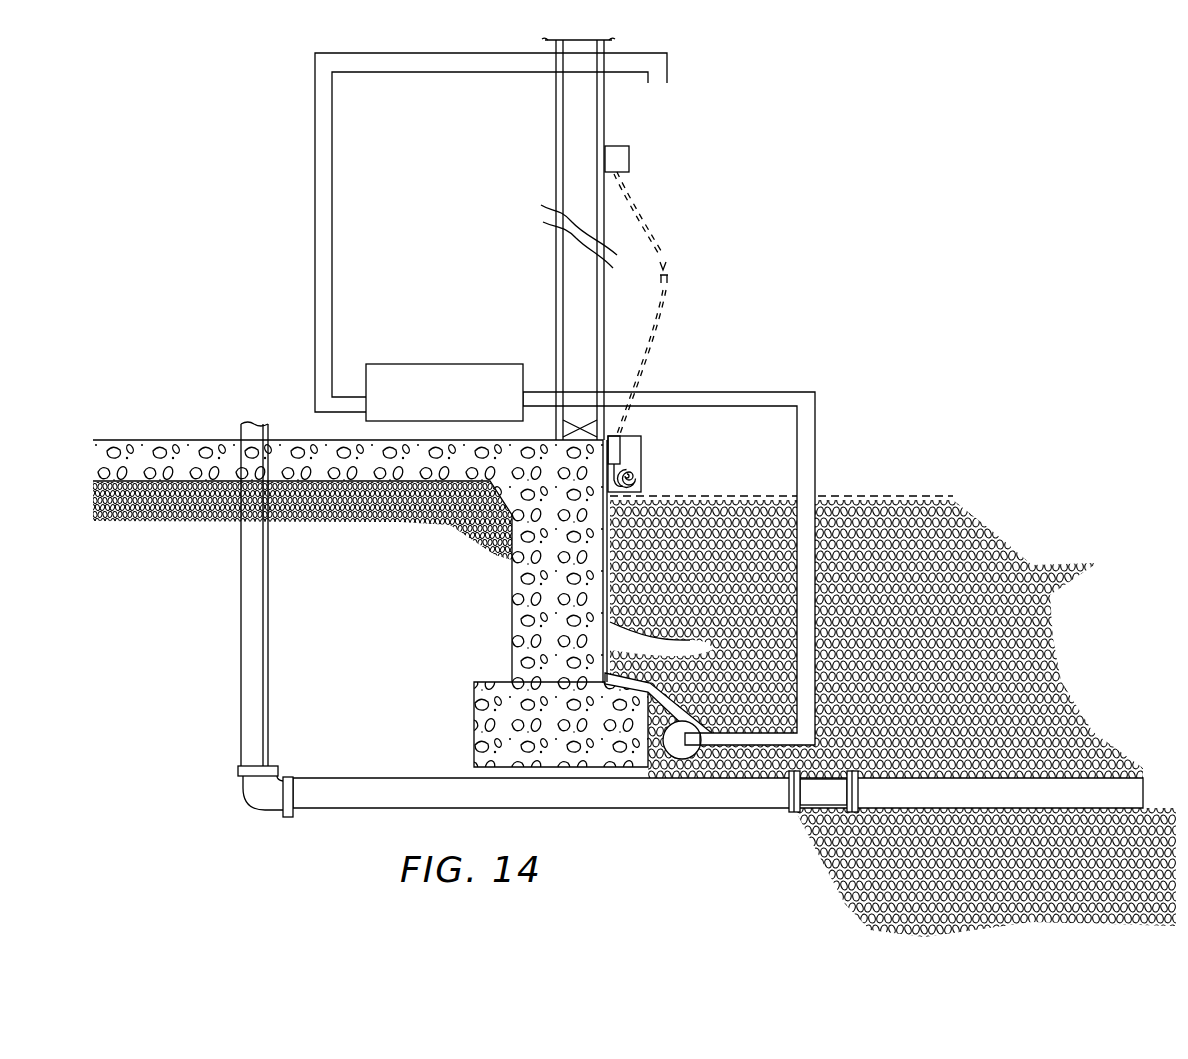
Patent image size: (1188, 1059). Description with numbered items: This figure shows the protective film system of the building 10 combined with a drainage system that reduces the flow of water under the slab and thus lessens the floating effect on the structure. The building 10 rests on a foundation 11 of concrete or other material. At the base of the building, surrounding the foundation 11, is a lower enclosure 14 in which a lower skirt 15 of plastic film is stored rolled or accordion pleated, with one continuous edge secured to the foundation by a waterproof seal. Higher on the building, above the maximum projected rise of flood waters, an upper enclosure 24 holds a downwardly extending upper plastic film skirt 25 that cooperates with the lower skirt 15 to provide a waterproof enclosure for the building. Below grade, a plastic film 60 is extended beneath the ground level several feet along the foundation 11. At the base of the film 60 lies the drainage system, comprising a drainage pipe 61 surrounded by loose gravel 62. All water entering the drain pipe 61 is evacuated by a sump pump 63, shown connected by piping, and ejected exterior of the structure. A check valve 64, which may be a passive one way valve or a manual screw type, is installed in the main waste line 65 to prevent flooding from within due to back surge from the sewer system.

The building 10 is at (618, 122).
The upper enclosure 24 is at (646, 163).
The upper plastic film skirt 25 is at (661, 255).
The lower skirt 15 is at (649, 338).
The sump pump 63 is at (440, 352).
The lower enclosure 14 is at (654, 475).
The foundation 11 is at (518, 611).
The plastic film 60 is at (652, 646).
The loose gravel 62 is at (1060, 677).
The check valve 64 is at (840, 802).
The drainage pipe 61 is at (672, 760).
The main waste line 65 is at (352, 808).